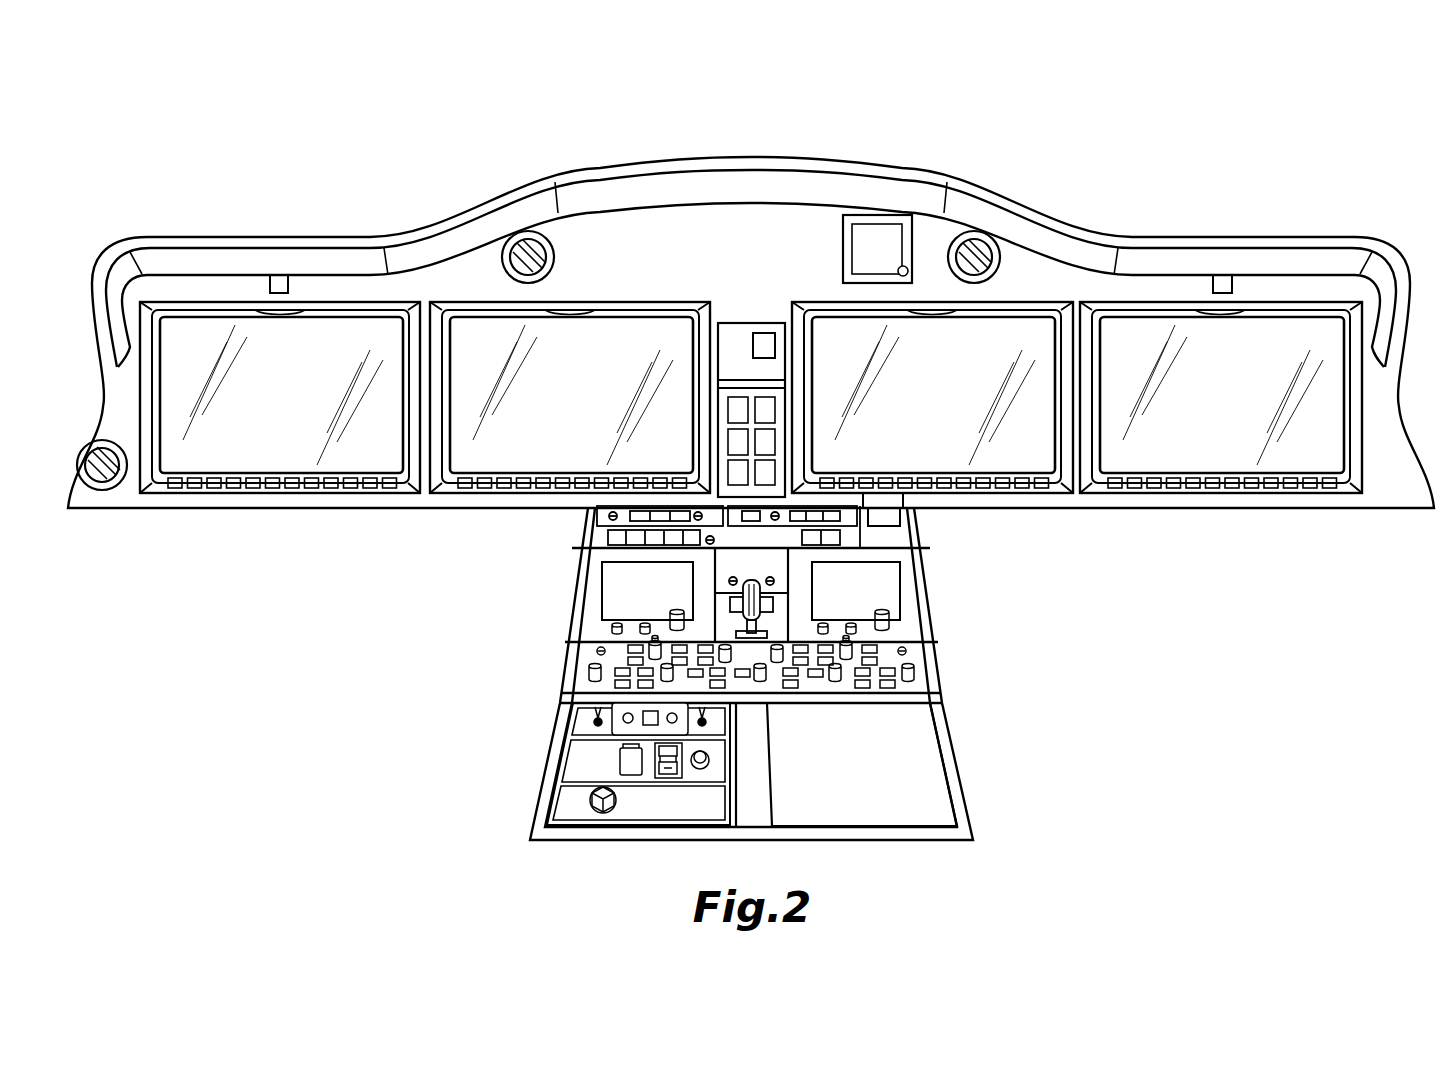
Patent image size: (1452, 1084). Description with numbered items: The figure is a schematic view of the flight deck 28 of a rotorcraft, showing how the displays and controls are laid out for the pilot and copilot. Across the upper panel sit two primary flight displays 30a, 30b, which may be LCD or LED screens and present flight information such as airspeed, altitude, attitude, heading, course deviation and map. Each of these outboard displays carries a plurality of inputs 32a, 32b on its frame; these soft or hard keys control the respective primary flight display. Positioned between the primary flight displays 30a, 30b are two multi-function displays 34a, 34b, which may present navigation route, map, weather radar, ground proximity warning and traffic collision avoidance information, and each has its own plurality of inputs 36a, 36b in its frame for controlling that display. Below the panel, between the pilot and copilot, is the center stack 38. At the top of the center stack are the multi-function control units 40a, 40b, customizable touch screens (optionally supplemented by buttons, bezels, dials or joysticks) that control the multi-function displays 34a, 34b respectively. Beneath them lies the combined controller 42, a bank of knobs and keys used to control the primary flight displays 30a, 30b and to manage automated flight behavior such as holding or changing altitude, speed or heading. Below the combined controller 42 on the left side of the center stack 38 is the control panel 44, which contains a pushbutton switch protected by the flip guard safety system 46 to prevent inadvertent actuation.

The flight deck 28 is at (1152, 134).
The primary flight display 30a is at (215, 352).
The primary flight display 30b is at (1288, 352).
The inputs 32a is at (253, 488).
The inputs 32b is at (1250, 488).
The multi-function display 34a is at (508, 353).
The multi-function display 34b is at (995, 352).
The inputs 36a is at (521, 488).
The inputs 36b is at (982, 488).
The center stack 38 is at (927, 773).
The multi-function control unit 40a is at (625, 592).
The multi-function control unit 40b is at (880, 592).
The combined controller 42 is at (923, 686).
The control panel 44 is at (578, 773).
The flip guard safety system 46 is at (663, 790).